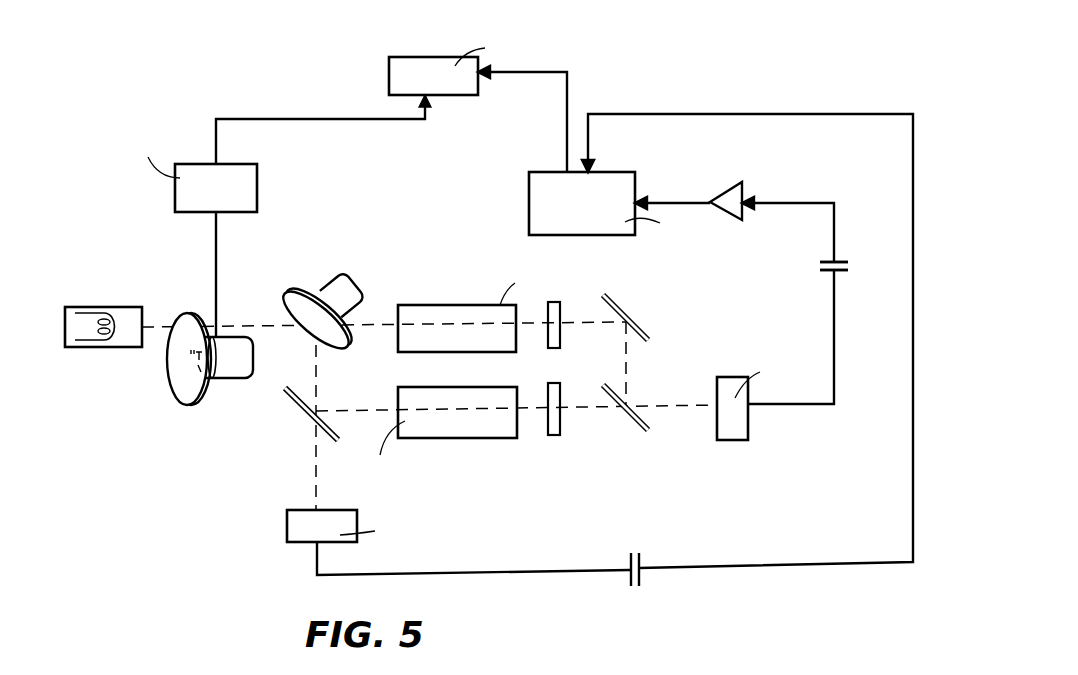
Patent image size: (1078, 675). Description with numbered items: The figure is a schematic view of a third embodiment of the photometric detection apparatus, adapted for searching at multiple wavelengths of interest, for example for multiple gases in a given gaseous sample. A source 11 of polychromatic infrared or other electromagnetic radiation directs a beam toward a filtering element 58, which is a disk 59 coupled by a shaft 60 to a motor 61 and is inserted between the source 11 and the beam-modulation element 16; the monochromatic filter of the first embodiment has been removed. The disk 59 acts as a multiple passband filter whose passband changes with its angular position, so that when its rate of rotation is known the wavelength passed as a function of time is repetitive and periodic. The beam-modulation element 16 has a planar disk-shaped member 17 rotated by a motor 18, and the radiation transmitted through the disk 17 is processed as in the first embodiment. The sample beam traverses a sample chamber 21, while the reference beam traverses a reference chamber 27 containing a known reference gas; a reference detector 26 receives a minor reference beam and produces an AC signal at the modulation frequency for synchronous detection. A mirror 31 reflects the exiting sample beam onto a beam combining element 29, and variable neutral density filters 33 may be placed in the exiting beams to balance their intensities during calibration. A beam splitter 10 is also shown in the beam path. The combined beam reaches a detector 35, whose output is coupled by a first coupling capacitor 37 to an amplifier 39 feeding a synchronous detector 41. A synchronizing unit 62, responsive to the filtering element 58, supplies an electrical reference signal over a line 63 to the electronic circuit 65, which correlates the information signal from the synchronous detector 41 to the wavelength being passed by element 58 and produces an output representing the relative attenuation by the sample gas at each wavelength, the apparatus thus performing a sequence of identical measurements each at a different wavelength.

The beam splitter mirror 10 is at (374, 326).
The source 11 is at (106, 305).
The beam-modulation element 16 is at (334, 258).
The planar disk-shaped member 17 is at (310, 284).
The motor 18 is at (353, 285).
The sample chamber 21 is at (458, 305).
The reference detector 26 is at (287, 525).
The reference chamber 27 is at (496, 430).
The beam combining element 29 is at (633, 424).
The mirror 31 is at (636, 314).
The variable neutral density filters 33 is at (555, 350).
The detector 35 is at (750, 418).
The first coupling capacitor 37 is at (840, 272).
The amplifier 39 is at (741, 191).
The synchronous detector 41 is at (529, 192).
The filtering element 58 is at (197, 304).
The disk 59 is at (184, 397).
The shaft 60 is at (206, 389).
The motor 61 is at (240, 367).
The synchronizing unit 62 is at (257, 187).
The line 63 is at (360, 121).
The electronic circuit 65 is at (389, 73).